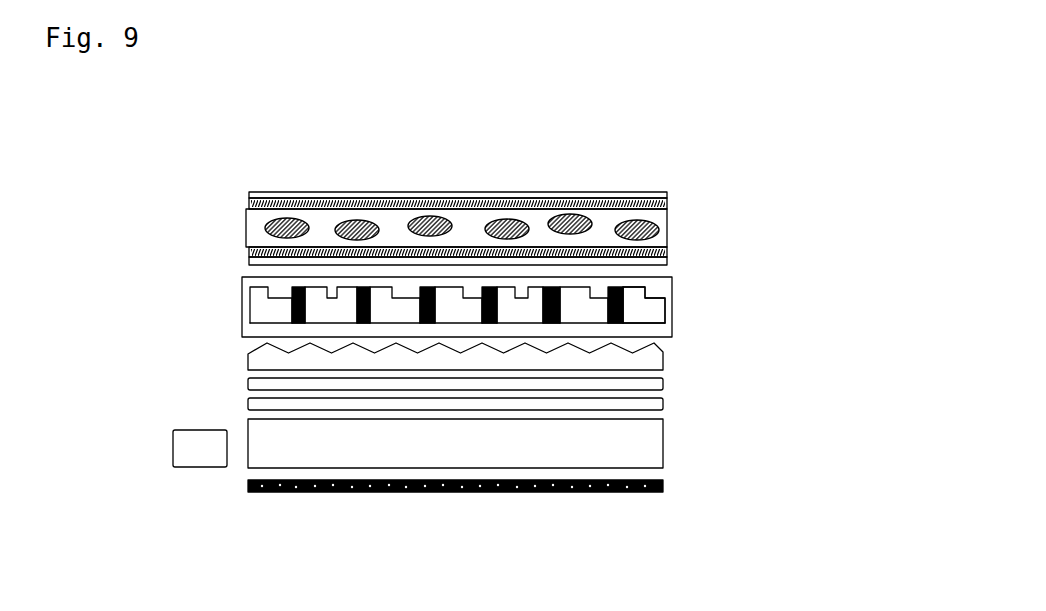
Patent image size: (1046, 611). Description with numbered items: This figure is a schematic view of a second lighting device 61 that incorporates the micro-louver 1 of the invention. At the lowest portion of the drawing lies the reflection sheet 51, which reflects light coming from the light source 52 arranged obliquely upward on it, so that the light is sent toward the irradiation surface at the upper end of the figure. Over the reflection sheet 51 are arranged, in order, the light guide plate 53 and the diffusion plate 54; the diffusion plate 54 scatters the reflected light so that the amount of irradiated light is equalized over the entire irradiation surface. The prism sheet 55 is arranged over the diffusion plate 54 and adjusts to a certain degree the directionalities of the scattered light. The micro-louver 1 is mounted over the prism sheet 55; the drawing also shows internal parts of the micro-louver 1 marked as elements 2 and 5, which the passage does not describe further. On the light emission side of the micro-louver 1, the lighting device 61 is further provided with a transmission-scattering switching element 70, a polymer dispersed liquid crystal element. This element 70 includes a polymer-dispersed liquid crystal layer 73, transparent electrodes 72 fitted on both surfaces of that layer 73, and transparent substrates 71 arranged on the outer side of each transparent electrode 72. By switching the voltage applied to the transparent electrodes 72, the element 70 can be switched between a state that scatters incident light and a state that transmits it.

The micro-louver 1 is at (476, 314).
The partition wall 2 is at (668, 282).
The pixel cell 5 is at (625, 294).
The reflection sheet 51 is at (663, 485).
The light source 52 is at (188, 430).
The light guide plate 53 is at (653, 455).
The diffusion plate 54 is at (663, 402).
The prism sheet 55 is at (663, 383).
The second lighting device 61 is at (690, 530).
The transmission-scattering switching element 70 is at (445, 221).
The transparent substrate 71 is at (667, 195).
The transparent electrode 72 is at (667, 204).
The polymer-dispersed liquid crystal layer 73 is at (667, 229).